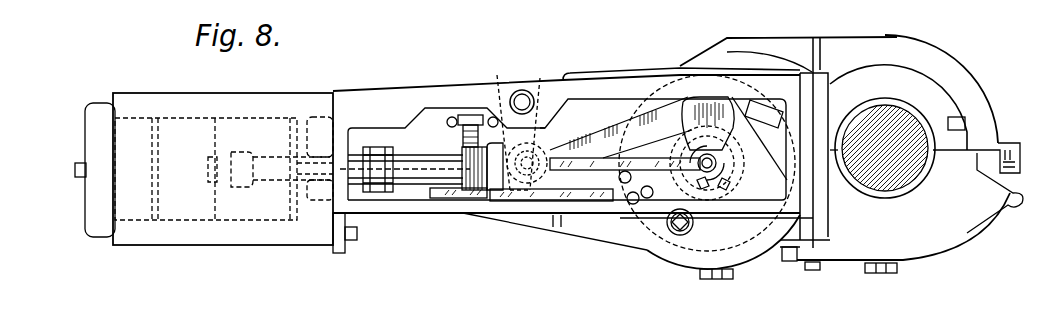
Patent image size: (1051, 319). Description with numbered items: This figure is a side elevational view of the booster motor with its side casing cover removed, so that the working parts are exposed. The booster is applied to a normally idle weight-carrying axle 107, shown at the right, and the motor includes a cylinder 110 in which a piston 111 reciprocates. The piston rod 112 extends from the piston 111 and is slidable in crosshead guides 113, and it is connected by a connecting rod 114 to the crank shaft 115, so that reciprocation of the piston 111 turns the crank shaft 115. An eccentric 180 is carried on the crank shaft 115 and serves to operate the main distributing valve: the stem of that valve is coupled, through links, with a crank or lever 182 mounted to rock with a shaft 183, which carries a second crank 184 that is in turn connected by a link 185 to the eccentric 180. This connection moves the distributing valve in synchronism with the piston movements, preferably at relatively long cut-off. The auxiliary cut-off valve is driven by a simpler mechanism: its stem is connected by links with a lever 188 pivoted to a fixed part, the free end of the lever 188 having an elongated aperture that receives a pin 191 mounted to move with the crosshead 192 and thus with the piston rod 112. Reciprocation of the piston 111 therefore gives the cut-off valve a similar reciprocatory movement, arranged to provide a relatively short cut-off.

The normally idle weight-carrying axle 107 is at (898, 125).
The cylinder 110 is at (90, 208).
The piston 111 is at (236, 210).
The piston rod 112 is at (420, 180).
The crosshead guides 113 is at (460, 197).
The connecting rod 114 is at (630, 127).
The crank shaft 115 is at (720, 182).
The eccentric 180 is at (728, 135).
The crank or lever 182 is at (503, 90).
The shaft 183 is at (550, 74).
The second crank 184 is at (540, 125).
The link 185 is at (593, 165).
The lever 188 is at (443, 132).
The pin 191 is at (468, 117).
The crosshead 192 is at (497, 165).